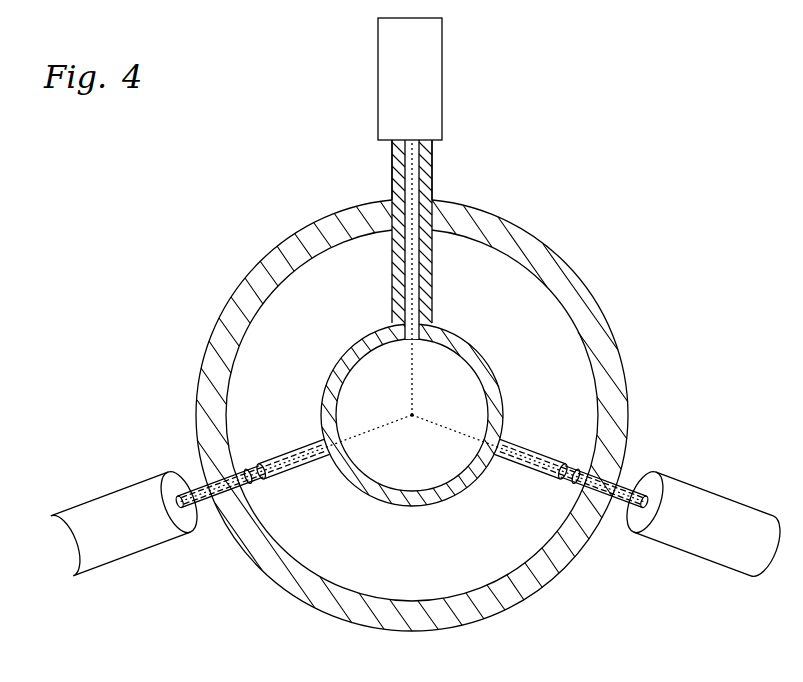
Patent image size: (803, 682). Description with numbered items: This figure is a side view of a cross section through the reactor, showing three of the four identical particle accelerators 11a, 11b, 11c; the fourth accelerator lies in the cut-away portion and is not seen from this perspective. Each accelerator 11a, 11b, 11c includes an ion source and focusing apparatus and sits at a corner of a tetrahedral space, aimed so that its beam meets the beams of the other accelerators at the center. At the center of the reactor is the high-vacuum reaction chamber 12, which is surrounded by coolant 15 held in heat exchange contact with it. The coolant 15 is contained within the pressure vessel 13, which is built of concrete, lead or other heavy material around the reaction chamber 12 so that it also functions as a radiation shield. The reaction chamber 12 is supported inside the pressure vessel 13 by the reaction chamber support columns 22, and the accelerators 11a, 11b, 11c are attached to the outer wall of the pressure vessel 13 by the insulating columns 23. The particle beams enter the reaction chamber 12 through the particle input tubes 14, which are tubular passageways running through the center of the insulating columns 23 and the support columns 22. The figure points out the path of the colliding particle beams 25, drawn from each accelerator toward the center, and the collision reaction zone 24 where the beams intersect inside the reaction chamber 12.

The particle accelerator 11a is at (378, 84).
The particle accelerator 11b is at (698, 483).
The particle accelerator 11c is at (118, 493).
The reaction chamber 12 is at (480, 348).
The pressure vessel 13 is at (541, 243).
The particle input tube 14 is at (393, 291).
The coolant 15 is at (304, 328).
The reaction chamber support column 22 is at (432, 312).
The insulating column 23 is at (431, 168).
The collision reaction zone 24 is at (413, 410).
The path of the colliding particle beams 25 is at (410, 364).